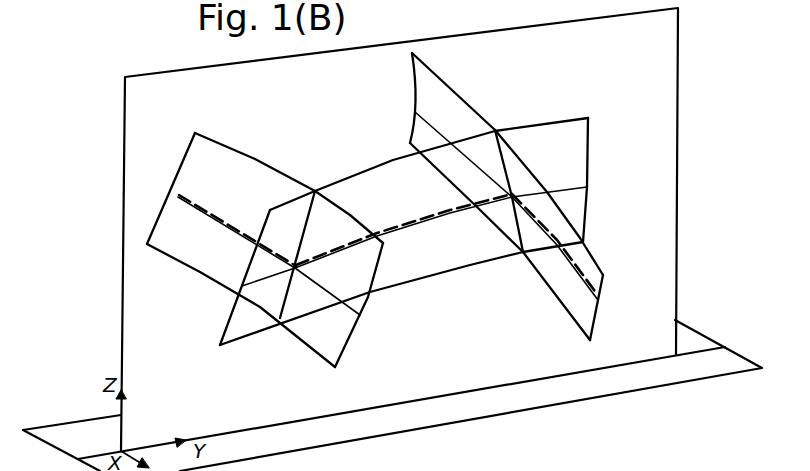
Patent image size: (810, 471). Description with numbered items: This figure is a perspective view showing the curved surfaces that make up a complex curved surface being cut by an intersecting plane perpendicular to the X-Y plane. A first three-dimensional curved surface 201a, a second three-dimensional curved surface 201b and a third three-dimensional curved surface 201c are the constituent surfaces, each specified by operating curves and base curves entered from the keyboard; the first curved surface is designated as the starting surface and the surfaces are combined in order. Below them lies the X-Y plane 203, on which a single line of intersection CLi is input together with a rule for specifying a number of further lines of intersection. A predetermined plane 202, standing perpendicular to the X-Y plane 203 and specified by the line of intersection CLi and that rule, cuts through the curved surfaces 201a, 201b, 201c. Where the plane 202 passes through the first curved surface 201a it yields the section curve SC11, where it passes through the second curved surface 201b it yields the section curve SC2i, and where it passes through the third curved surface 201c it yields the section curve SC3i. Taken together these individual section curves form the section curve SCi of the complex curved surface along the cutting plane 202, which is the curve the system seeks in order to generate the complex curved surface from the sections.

The first three-dimensional curved surface 201a is at (312, 333).
The second three-dimensional curved surface 201b is at (397, 277).
The third three-dimensional curved surface 201c is at (595, 320).
The predetermined plane 202 is at (664, 143).
The X-Y plane 203 is at (702, 338).
The section curve SC11 is at (181, 198).
The section curve SC2i is at (482, 256).
The section curve SC3i is at (598, 292).
The section curve of the complex curved surface SCi is at (392, 224).
The line of intersection CLi is at (695, 357).